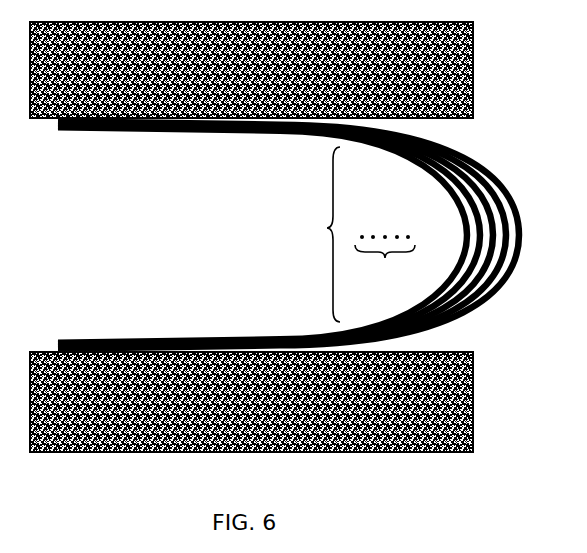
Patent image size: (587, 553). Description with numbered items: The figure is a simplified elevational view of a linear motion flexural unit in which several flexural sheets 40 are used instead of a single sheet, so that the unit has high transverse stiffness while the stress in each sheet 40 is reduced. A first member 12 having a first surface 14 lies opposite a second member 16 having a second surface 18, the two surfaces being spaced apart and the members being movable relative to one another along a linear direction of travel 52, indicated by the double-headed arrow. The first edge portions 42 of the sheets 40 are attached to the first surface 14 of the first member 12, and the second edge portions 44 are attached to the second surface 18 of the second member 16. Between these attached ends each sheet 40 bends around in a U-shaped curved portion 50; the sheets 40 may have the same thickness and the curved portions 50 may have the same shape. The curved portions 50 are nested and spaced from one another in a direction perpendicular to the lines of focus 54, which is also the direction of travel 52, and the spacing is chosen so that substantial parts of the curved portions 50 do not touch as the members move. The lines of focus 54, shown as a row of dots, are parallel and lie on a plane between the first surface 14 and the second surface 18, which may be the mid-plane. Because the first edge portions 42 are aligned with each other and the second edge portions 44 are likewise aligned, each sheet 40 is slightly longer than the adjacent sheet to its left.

The first member 12 is at (470, 401).
The first surface 14 is at (453, 350).
The second member 16 is at (463, 60).
The second surface 18 is at (439, 123).
The flexural sheets 40 is at (511, 155).
The first edge portions 42 is at (85, 338).
The second edge portions 44 is at (90, 135).
The curved portions 50 is at (318, 234).
The direction of travel 52 is at (140, 238).
The lines of focus 54 is at (385, 262).